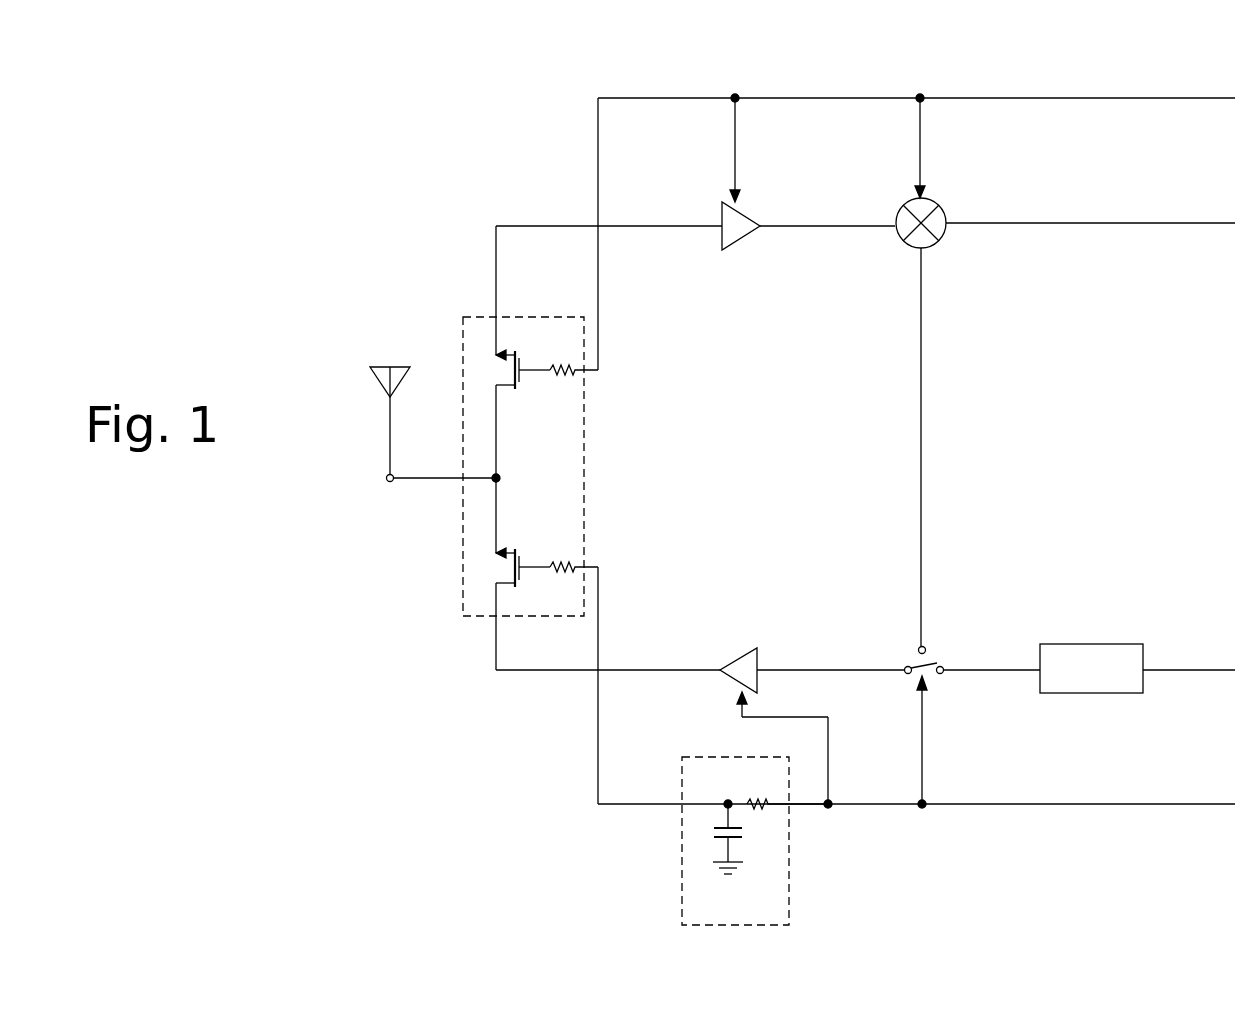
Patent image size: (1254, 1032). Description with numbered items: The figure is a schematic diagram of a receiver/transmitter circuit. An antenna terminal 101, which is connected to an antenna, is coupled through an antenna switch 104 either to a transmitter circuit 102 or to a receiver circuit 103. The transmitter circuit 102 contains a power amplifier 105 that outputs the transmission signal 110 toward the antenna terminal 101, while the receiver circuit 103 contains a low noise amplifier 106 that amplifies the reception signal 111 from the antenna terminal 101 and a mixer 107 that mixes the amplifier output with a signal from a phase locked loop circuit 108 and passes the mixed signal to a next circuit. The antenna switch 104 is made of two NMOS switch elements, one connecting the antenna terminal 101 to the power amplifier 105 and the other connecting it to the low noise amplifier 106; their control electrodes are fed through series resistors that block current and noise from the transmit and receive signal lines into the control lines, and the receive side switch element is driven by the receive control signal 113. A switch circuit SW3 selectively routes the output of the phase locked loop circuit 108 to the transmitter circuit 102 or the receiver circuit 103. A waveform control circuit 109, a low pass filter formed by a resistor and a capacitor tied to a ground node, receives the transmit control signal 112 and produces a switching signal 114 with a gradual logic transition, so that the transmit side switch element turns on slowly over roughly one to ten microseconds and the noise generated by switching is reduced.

The antenna terminal 101 is at (388, 486).
The transmitter circuit 102 is at (752, 616).
The receiver circuit 103 is at (776, 311).
The antenna switch 104 is at (460, 598).
The power amplifier 105 is at (760, 655).
The low noise amplifier 106 is at (757, 210).
The mixer 107 is at (948, 204).
The phase locked loop circuit 108 is at (1100, 643).
The waveform control circuit 109 is at (789, 877).
The transmission signal 110 is at (518, 672).
The reception signal 111 is at (520, 225).
The transmit control signal 112 is at (1072, 803).
The receive control signal 113 is at (1012, 97).
The switching signal 114 is at (598, 772).
The switch circuit SW3 is at (940, 648).